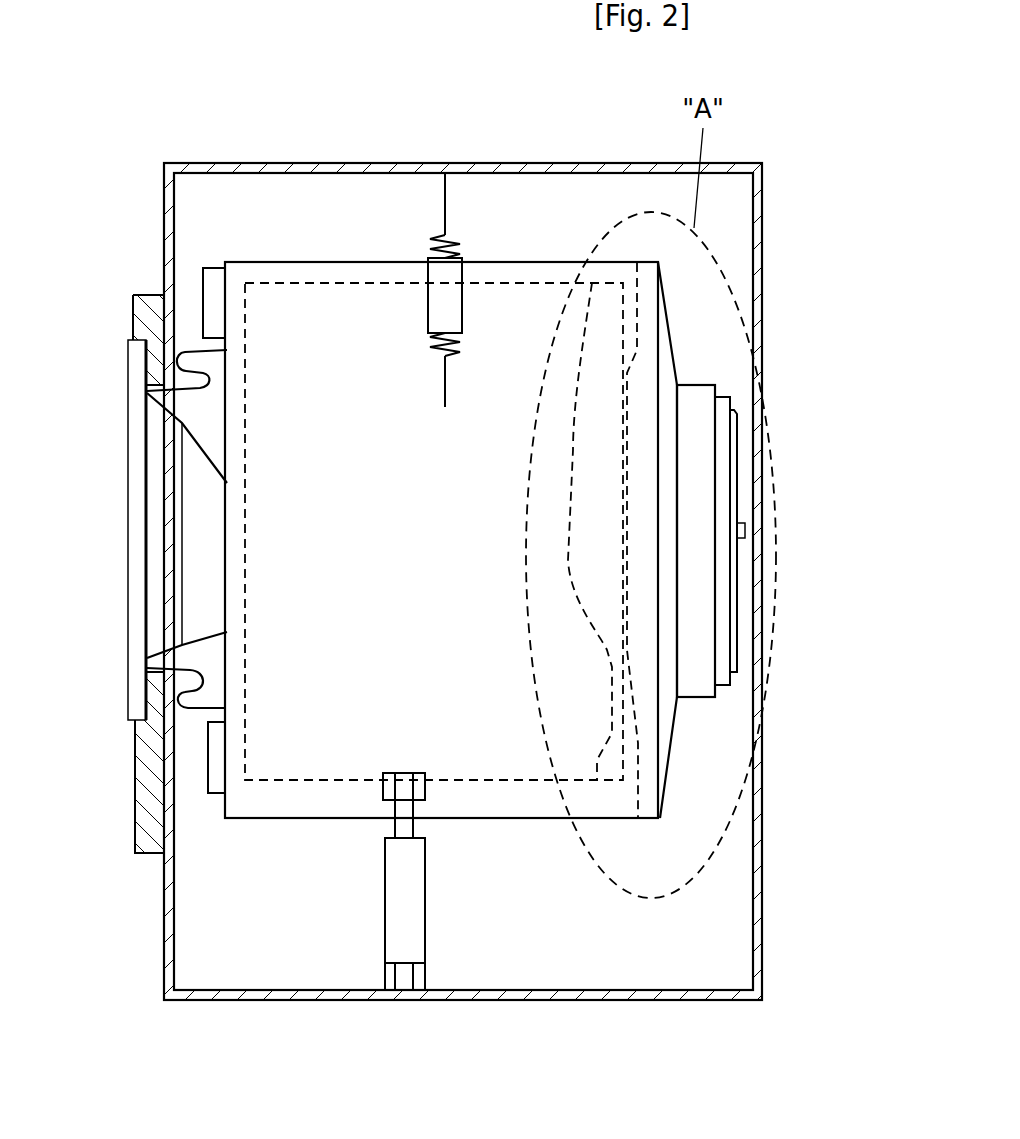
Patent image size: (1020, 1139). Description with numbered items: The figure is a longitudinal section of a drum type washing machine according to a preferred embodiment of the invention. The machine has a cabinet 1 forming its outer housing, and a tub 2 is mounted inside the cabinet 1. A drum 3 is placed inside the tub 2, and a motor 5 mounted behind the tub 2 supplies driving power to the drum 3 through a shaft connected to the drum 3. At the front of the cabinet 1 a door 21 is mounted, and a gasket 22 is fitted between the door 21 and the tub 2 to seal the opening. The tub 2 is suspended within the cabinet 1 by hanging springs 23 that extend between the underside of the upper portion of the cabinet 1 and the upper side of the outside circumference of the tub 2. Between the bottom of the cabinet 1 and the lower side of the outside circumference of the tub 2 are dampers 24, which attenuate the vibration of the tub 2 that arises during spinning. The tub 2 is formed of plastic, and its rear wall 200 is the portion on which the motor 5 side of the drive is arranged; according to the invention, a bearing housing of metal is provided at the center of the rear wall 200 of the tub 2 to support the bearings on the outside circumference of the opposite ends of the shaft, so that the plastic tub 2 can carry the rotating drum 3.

The cabinet 1 is at (245, 163).
The tub 2 is at (540, 262).
The drum 3 is at (347, 283).
The motor 5 is at (722, 608).
The door 21 is at (135, 527).
The gasket 22 is at (195, 715).
The hanging springs 23 is at (451, 237).
The dampers 24 is at (396, 921).
The rear wall 200 is at (672, 328).